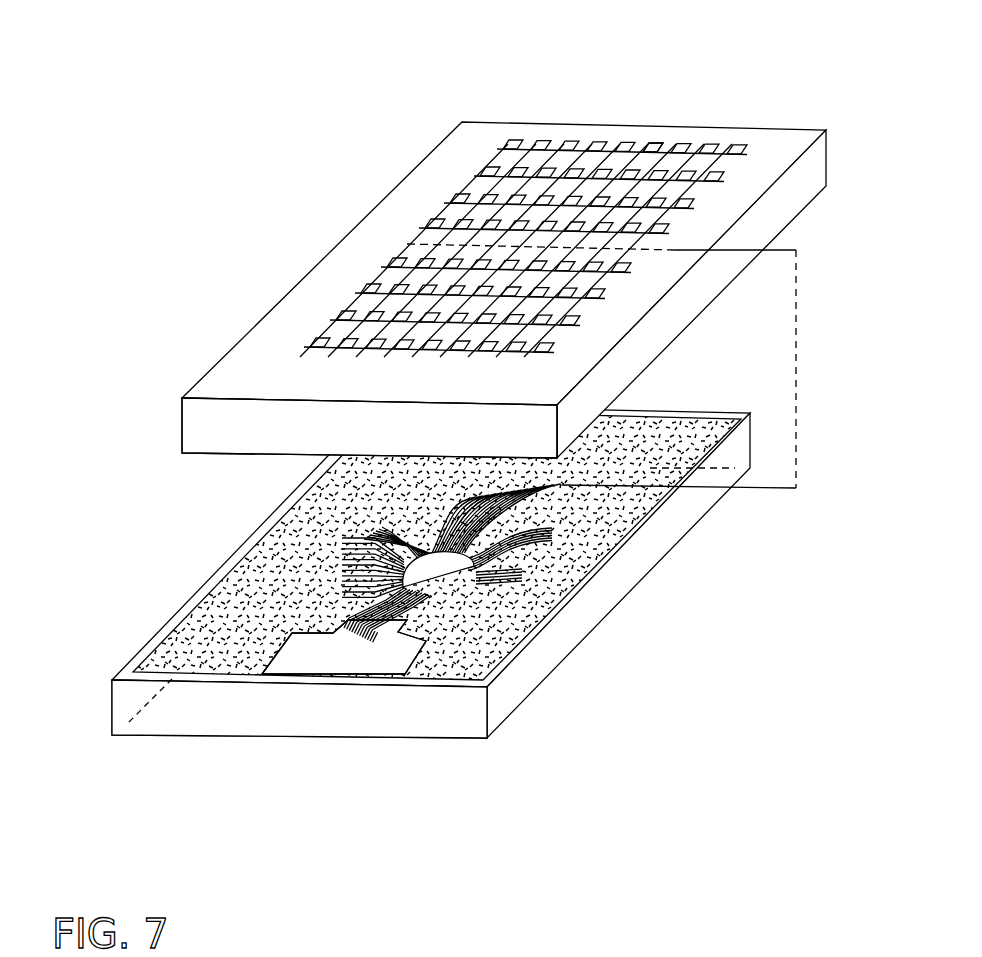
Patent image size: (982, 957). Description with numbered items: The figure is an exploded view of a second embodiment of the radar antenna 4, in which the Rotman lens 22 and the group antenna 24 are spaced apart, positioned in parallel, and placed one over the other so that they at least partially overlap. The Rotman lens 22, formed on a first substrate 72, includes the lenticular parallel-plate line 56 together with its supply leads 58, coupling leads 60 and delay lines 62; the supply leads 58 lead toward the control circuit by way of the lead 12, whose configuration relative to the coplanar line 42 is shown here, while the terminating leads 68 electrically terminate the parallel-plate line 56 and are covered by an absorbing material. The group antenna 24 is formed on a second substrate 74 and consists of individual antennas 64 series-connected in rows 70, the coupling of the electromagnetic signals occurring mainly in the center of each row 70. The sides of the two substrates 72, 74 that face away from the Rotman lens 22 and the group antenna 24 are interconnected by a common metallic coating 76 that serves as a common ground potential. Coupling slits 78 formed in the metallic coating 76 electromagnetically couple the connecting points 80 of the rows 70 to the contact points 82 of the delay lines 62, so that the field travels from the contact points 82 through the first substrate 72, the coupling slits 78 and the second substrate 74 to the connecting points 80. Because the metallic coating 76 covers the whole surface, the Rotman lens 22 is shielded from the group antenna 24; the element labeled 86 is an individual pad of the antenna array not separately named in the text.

The radar antenna 4 is at (247, 202).
The lead 12 is at (363, 615).
The Rotman lens 22 is at (583, 575).
The group antenna 24 is at (400, 230).
The coplanar line 42 is at (368, 632).
The parallel-plate line 56 is at (430, 573).
The supply leads 58 is at (377, 603).
The coupling leads 60 is at (405, 550).
The delay lines 62 is at (475, 497).
The individual antennas 64 is at (457, 198).
The terminating leads 68 is at (492, 585).
The rows of individual antennas 70 is at (742, 157).
The first substrate 72 is at (205, 713).
The second substrate 74 is at (249, 429).
The metallic coating 76 is at (133, 665).
The coupling slits 78 is at (537, 483).
The connecting points 80 is at (433, 243).
The contact points 82 is at (562, 485).
The electrode pad 86 is at (647, 147).